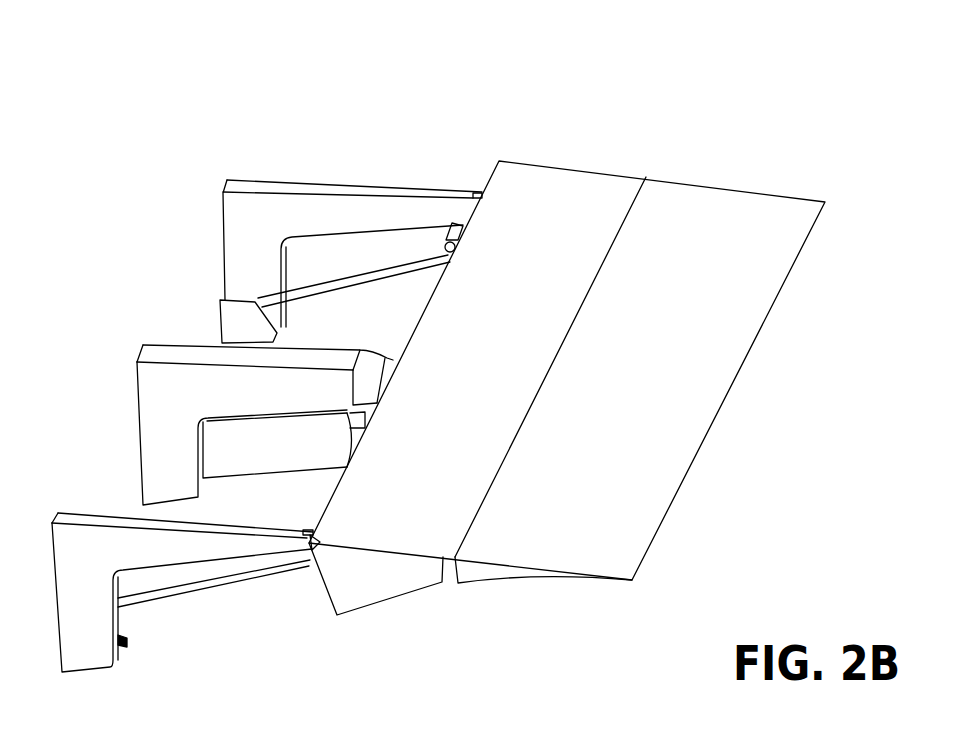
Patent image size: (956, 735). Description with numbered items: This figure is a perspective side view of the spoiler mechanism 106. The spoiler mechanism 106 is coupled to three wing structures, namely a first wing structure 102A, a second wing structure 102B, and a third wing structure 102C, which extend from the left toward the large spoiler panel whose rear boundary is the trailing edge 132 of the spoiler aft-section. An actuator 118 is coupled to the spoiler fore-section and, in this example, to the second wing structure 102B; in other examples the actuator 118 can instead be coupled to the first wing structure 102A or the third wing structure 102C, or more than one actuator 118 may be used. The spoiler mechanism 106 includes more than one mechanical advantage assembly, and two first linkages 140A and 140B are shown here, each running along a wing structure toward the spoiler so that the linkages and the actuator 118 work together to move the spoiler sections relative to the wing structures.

The spoiler mechanism 106 is at (598, 324).
The trailing edge 132 is at (812, 295).
The first wing structure 102A is at (118, 515).
The second wing structure 102B is at (168, 355).
The third wing structure 102C is at (283, 180).
The first linkage 140A is at (152, 602).
The first linkage 140B is at (300, 290).
The actuator 118 is at (230, 468).